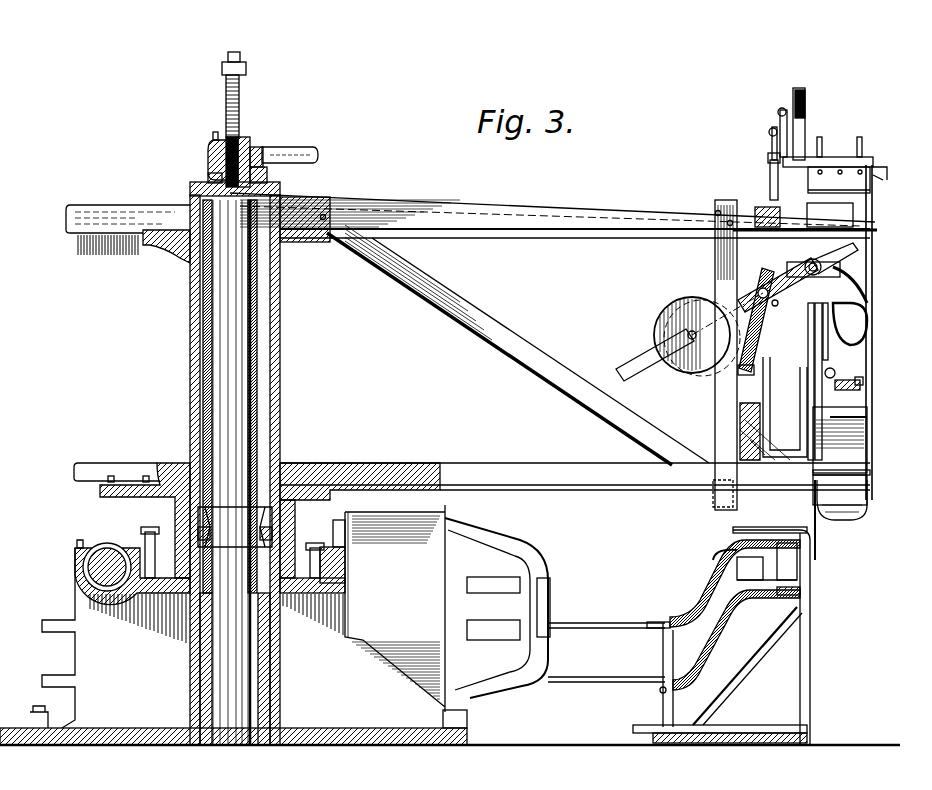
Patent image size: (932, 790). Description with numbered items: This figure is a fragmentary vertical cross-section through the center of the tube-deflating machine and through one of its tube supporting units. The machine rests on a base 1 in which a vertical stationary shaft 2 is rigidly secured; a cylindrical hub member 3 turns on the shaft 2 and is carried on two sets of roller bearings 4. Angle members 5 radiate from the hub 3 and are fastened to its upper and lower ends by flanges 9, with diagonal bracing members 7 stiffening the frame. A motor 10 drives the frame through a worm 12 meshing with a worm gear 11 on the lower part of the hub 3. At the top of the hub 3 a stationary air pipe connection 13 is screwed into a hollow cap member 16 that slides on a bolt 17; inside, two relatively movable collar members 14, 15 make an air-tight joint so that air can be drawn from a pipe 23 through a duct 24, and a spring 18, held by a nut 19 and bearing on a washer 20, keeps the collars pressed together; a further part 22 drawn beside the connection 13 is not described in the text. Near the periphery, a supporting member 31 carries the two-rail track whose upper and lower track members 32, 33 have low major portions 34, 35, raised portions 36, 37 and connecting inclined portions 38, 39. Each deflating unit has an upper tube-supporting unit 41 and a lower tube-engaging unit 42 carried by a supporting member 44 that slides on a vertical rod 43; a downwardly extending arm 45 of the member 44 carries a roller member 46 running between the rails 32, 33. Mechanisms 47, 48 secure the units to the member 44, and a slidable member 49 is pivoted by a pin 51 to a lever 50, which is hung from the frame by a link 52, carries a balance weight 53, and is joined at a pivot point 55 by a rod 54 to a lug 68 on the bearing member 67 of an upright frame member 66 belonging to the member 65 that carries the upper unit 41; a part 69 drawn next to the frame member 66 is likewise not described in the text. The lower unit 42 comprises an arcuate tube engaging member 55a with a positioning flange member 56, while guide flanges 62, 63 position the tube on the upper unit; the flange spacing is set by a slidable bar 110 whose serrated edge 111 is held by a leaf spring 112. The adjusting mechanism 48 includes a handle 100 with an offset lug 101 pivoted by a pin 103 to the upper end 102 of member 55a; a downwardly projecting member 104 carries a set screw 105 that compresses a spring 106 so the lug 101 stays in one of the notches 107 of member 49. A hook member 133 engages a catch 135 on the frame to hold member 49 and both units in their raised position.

The base 1 is at (80, 650).
The stationary shaft 2 is at (205, 350).
The hub member 3 is at (282, 350).
The roller bearings 4 is at (218, 522).
The angle members 5 is at (520, 232).
The bracing members 7 is at (510, 352).
The flanges 9 is at (180, 260).
The motor 10 is at (535, 560).
The worm gear 11 is at (150, 540).
The worm 12 is at (76, 575).
The air pipe connection 13 is at (312, 147).
The collar member 14 is at (258, 175).
The collar member 15 is at (270, 186).
The hollow cap member 16 is at (209, 153).
The bolt 17 is at (241, 57).
The spring 18 is at (226, 100).
The nut 19 is at (247, 70).
The washer 20 is at (245, 140).
The handle hub 22 is at (263, 148).
The pipe 23 is at (430, 196).
The duct 24 is at (215, 178).
The supporting member 31 is at (810, 663).
The track member 32 is at (697, 590).
The track member 33 is at (752, 597).
The major portion 34 is at (650, 624).
The major portion 35 is at (628, 678).
The raised portion 36 is at (810, 535).
The raised portion 37 is at (800, 592).
The inclined portion 38 is at (718, 563).
The inclined portion 39 is at (725, 630).
The upper tube-supporting unit 41 is at (868, 190).
The lower tube-engaging unit 42 is at (872, 472).
The vertical rod 43 is at (805, 92).
The supporting member 44 is at (822, 330).
The arm 45 is at (773, 408).
The roller member 46 is at (800, 566).
The mechanism 47 is at (853, 247).
The adjusting mechanism 48 is at (867, 295).
The slidable member 49 is at (828, 330).
The lever 50 is at (736, 305).
The pin 51 is at (840, 268).
The link 52 is at (740, 300).
The balance weight 53 is at (670, 315).
The rod 54 is at (716, 240).
The pivot point 55 is at (755, 300).
The tube engaging member 55a is at (855, 520).
The flange member 56 is at (818, 552).
The guide flange 62 is at (820, 137).
The guide flange 63 is at (860, 137).
The member 65 is at (770, 172).
The upright frame member 66 is at (771, 132).
The bearing member 67 is at (806, 105).
The lug 68 is at (781, 110).
The rod 69 is at (772, 140).
The handle 100 is at (867, 320).
The offset lug 101 is at (833, 277).
The upper end 102 is at (867, 437).
The pin 103 is at (835, 373).
The downwardly projecting member 104 is at (860, 390).
The set screw 105 is at (862, 380).
The compression spring 106 is at (867, 416).
The notches 107 is at (781, 297).
The slidable bar 110 is at (887, 165).
The serrated edge 111 is at (885, 167).
The leaf spring 112 is at (884, 180).
The hook member 133 is at (855, 230).
The catch 135 is at (825, 228).